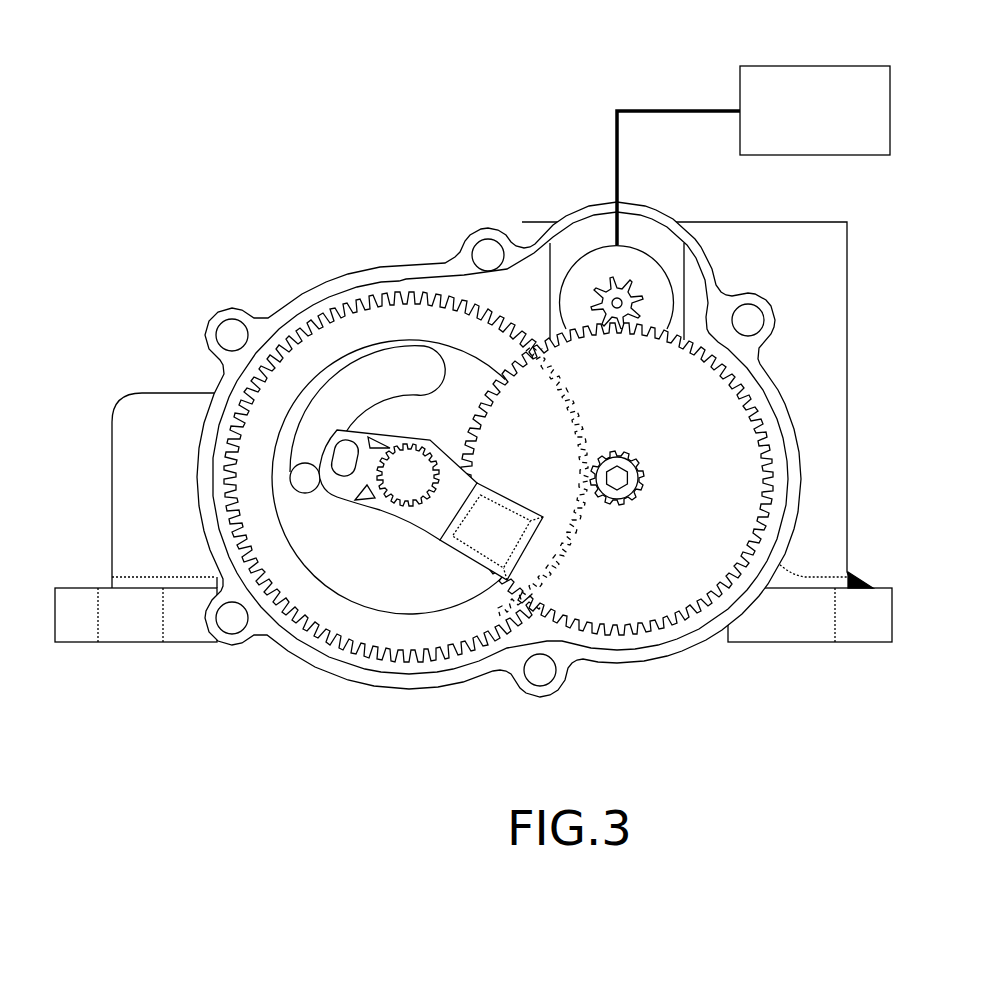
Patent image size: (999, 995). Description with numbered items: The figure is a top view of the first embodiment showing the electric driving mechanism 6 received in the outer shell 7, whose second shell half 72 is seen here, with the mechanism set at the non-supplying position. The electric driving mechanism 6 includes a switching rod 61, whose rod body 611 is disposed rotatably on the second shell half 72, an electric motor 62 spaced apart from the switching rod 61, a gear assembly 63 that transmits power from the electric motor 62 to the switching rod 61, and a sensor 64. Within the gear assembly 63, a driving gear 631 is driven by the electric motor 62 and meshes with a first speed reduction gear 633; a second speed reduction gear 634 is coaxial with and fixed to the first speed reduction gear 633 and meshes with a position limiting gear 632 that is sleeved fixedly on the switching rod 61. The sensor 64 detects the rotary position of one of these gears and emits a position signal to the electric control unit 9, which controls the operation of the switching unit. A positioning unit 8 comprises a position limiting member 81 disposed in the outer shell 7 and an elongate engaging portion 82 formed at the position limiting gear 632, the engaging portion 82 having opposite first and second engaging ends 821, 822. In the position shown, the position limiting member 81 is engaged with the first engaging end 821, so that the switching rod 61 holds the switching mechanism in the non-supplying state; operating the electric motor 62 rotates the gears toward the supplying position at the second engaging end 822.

The electric driving mechanism 6 is at (330, 225).
The outer shell 7 is at (680, 676).
The second shell half 72 is at (636, 662).
The positioning unit 8 is at (368, 417).
The position limiting member 81 is at (291, 481).
The engaging portion 82 is at (320, 400).
The first engaging end 821 is at (282, 526).
The second engaging end 822 is at (446, 366).
The electric control unit 9 is at (920, 111).
The switching rod 61 is at (407, 593).
The rod body 611 is at (378, 514).
The electric motor 62 is at (640, 247).
The gear assembly 63 is at (689, 473).
The driving gear 631 is at (640, 300).
The position limiting gear 632 is at (388, 293).
The first speed reduction gear 633 is at (772, 428).
The second speed reduction gear 634 is at (646, 468).
The sensor 64 is at (453, 590).